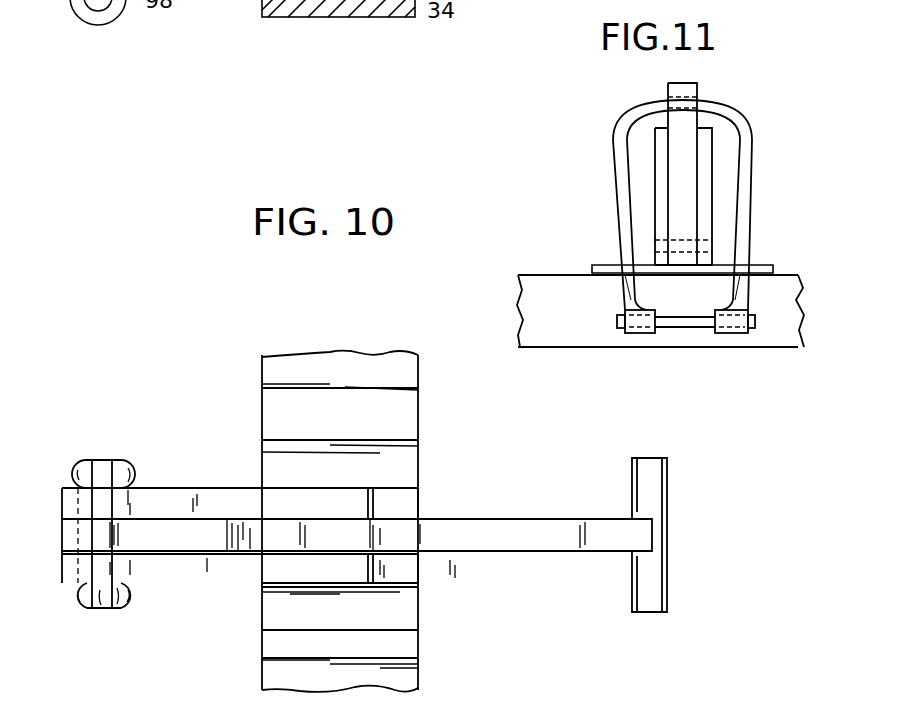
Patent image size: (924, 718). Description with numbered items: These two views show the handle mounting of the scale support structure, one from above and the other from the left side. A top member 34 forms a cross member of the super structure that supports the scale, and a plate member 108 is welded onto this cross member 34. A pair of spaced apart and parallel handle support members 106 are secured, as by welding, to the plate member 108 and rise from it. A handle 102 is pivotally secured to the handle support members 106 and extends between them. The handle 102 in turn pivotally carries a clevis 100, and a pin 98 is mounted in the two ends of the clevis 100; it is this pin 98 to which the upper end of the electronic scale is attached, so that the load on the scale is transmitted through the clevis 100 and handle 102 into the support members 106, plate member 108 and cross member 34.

In FIG. 10, the top member 34 is at (397, 426).
In FIG. 11, the top member 34 is at (777, 333).
In FIG. 11, the pin 98 is at (693, 323).
In FIG. 10, the clevis 100 is at (104, 470).
In FIG. 11, the clevis 100 is at (645, 108).
In FIG. 10, the handle 102 is at (338, 564).
In FIG. 11, the handle 102 is at (682, 145).
In FIG. 10, the handle support members 106 is at (193, 498).
In FIG. 11, the handle support members 106 is at (662, 203).
In FIG. 10, the plate member 108 is at (404, 615).
In FIG. 11, the plate member 108 is at (612, 273).